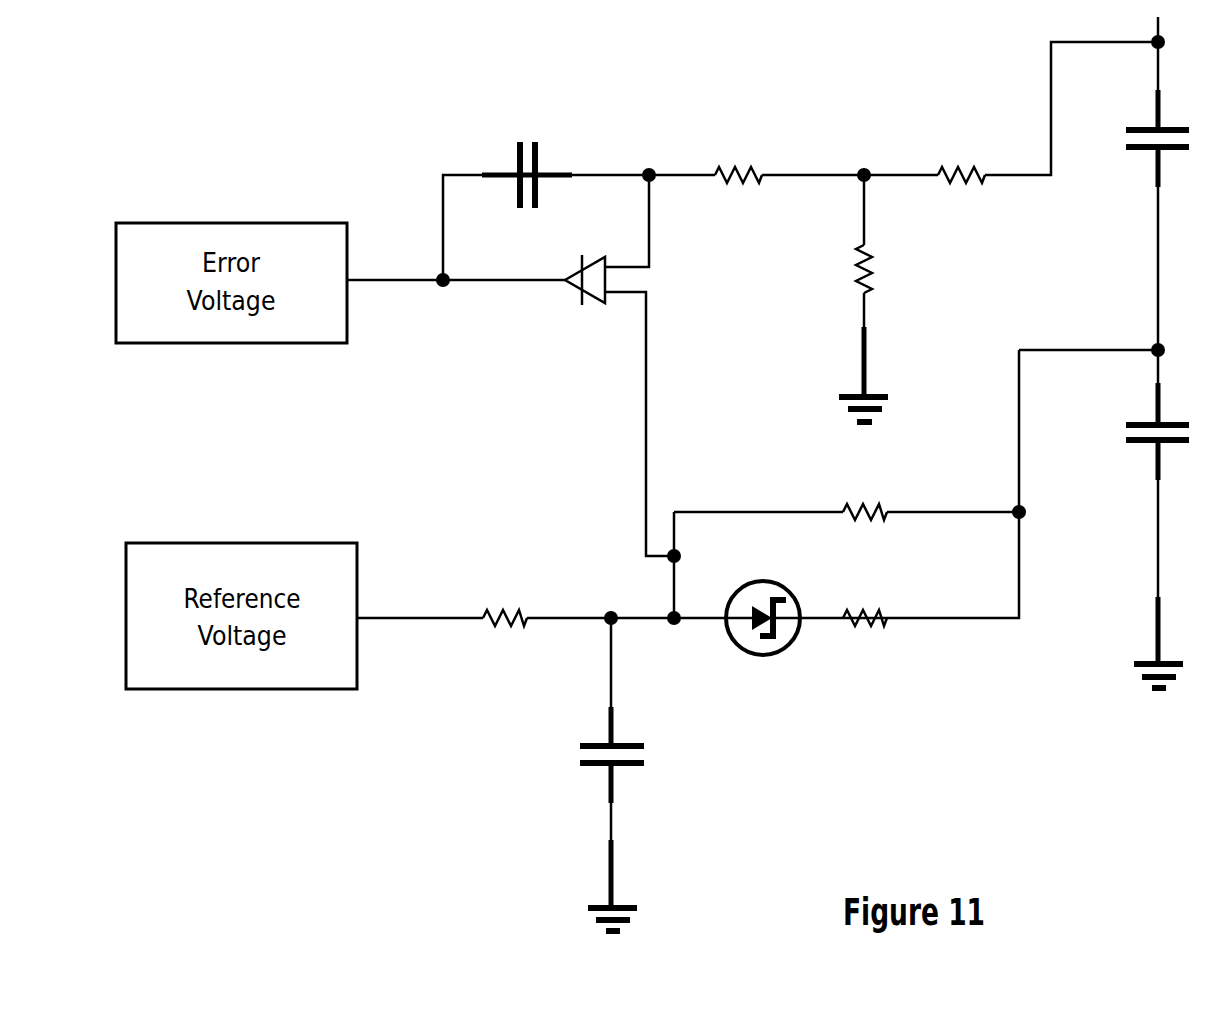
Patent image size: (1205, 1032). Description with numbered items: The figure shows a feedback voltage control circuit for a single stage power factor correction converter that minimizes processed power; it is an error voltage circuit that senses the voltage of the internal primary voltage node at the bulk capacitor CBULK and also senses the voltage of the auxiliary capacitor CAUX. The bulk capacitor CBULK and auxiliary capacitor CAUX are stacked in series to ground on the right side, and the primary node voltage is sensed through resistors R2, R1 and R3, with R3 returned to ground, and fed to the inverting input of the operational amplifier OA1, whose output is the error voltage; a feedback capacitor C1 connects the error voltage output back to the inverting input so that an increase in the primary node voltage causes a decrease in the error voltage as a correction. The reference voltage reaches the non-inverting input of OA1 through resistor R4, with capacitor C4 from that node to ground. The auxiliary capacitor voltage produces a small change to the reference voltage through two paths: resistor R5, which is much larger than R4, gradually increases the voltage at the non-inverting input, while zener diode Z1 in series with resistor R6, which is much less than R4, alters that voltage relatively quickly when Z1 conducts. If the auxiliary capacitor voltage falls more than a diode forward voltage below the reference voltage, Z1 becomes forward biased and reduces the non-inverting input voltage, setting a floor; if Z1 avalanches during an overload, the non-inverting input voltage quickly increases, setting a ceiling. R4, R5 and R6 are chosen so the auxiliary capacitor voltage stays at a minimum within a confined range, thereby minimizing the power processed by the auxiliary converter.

The resistor R1 is at (738, 193).
The resistor R2 is at (961, 193).
The resistor R3 is at (880, 269).
The resistor R4 is at (505, 635).
The resistor R5 is at (865, 529).
The resistor R6 is at (865, 635).
The capacitor C1 is at (530, 199).
The capacitor C4 is at (592, 756).
The bulk capacitor CBULK is at (1125, 141).
The auxiliary capacitor CAUX is at (1129, 433).
The operational amplifier OA1 is at (592, 264).
The zener diode Z1 is at (764, 636).